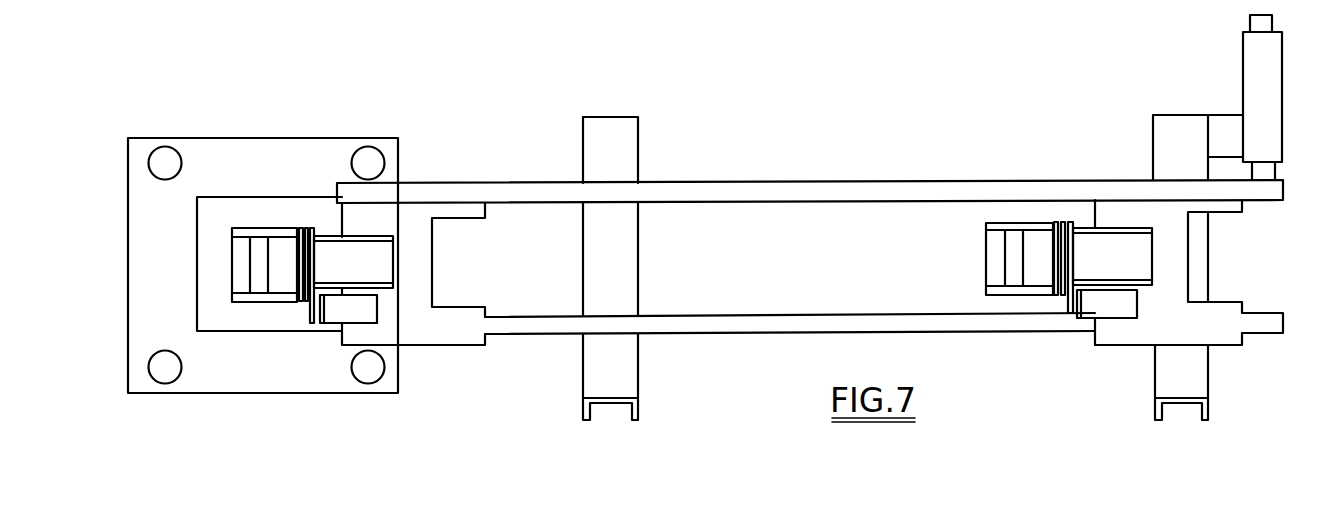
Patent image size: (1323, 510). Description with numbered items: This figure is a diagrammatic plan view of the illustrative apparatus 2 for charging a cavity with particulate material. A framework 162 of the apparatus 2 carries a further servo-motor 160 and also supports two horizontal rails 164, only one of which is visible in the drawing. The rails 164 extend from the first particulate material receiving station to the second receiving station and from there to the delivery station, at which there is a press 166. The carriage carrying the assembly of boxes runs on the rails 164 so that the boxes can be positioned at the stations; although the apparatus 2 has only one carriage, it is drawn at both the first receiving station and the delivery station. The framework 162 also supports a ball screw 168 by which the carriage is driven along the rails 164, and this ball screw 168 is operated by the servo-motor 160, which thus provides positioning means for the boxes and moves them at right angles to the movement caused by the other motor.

The apparatus 2 is at (1263, 230).
The servo-motor 160 is at (1253, 88).
The framework 162 is at (592, 127).
The horizontal rails 164 is at (682, 327).
The press 166 is at (187, 145).
The ball screw 168 is at (827, 187).